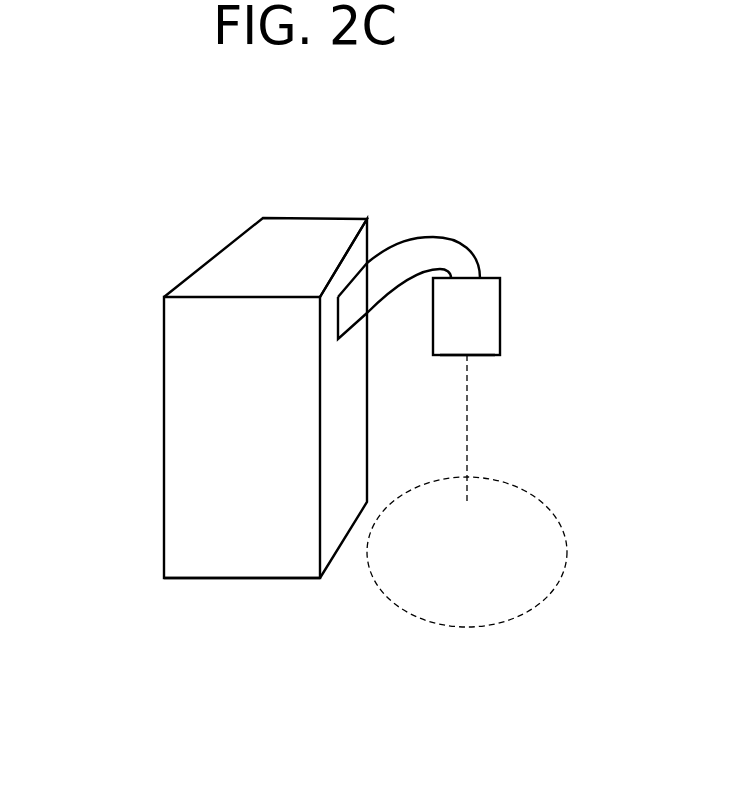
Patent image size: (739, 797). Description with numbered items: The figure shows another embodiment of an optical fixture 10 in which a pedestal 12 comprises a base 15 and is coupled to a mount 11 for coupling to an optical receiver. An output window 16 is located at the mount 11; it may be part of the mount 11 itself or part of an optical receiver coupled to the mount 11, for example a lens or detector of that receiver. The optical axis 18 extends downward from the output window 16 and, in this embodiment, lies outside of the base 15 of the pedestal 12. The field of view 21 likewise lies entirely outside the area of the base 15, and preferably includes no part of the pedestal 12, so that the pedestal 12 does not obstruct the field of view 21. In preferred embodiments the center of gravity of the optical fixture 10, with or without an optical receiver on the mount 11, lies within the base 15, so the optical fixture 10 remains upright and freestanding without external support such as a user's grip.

The optical fixture 10 is at (137, 355).
The mount 11 is at (500, 292).
The pedestal 12 is at (298, 218).
The base 15 is at (193, 580).
The output window 16 is at (485, 355).
The optical axis 18 is at (467, 436).
The field of view 21 is at (540, 537).